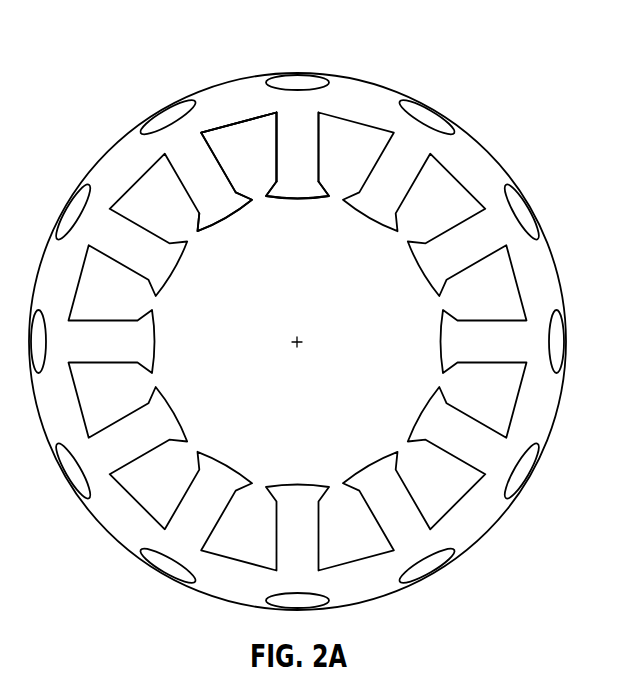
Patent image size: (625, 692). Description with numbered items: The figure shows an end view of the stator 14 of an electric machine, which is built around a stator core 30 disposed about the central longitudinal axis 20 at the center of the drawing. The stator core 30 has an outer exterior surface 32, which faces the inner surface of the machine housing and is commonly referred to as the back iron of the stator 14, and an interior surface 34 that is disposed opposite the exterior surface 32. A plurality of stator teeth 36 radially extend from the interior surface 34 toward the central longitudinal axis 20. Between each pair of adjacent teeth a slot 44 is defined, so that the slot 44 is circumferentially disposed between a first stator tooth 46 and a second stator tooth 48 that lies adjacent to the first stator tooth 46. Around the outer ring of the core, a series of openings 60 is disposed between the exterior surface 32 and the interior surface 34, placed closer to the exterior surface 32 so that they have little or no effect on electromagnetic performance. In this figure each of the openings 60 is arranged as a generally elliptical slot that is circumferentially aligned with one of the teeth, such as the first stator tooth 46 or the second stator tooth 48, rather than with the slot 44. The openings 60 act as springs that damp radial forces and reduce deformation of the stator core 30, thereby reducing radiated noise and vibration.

The stator 14 is at (456, 40).
The central longitudinal axis 20 is at (299, 345).
The stator core 30 is at (382, 78).
The exterior surface 32 is at (227, 83).
The interior surface 34 is at (247, 113).
The plurality of stator teeth 36 is at (236, 224).
The slot 44 is at (257, 186).
The first stator tooth 46 is at (206, 203).
The second stator tooth 48 is at (300, 180).
The openings 60 is at (306, 96).